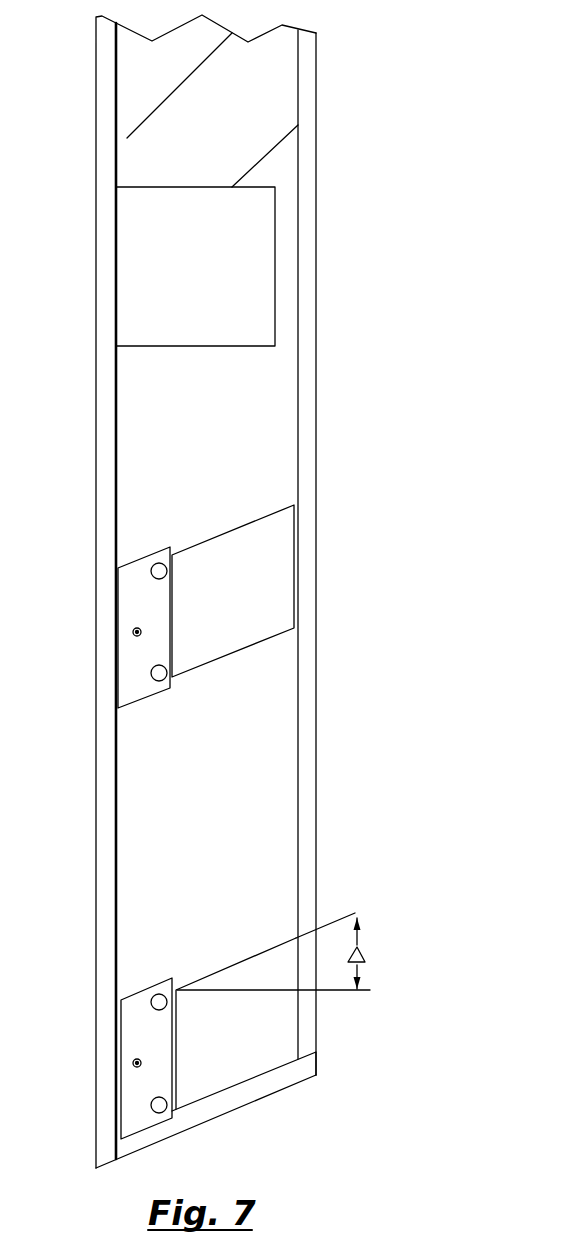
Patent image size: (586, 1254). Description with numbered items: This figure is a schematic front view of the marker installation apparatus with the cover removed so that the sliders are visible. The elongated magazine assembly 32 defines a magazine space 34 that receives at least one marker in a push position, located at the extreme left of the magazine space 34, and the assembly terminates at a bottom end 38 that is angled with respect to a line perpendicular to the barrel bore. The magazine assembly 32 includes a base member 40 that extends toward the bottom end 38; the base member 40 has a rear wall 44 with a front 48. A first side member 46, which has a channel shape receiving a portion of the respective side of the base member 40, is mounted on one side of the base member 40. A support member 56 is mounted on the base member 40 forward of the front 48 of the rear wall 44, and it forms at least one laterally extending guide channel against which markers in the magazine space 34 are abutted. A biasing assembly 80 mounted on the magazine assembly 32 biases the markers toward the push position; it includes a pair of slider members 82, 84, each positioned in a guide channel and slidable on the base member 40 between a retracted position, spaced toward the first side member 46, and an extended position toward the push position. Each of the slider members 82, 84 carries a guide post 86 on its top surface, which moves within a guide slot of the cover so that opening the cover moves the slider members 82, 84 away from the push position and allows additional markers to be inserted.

The magazine assembly 32 is at (327, 757).
The magazine space 34 is at (263, 703).
The bottom end 38 is at (245, 1102).
The base member 40 is at (250, 852).
The rear wall 44 is at (267, 1003).
The first side member 46 is at (307, 878).
The front 48 is at (258, 804).
The support member 56 is at (160, 875).
The biasing assembly 80 is at (265, 577).
The slider member 82 is at (138, 605).
The slider member 84 is at (138, 1037).
The guide post 86 is at (134, 1064).